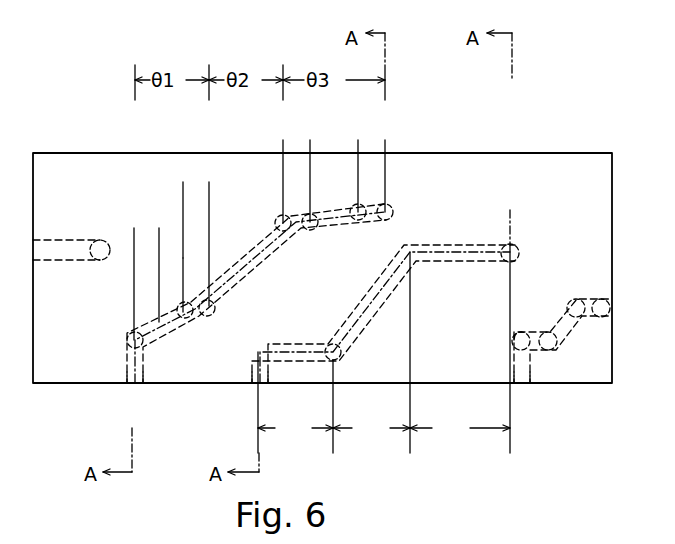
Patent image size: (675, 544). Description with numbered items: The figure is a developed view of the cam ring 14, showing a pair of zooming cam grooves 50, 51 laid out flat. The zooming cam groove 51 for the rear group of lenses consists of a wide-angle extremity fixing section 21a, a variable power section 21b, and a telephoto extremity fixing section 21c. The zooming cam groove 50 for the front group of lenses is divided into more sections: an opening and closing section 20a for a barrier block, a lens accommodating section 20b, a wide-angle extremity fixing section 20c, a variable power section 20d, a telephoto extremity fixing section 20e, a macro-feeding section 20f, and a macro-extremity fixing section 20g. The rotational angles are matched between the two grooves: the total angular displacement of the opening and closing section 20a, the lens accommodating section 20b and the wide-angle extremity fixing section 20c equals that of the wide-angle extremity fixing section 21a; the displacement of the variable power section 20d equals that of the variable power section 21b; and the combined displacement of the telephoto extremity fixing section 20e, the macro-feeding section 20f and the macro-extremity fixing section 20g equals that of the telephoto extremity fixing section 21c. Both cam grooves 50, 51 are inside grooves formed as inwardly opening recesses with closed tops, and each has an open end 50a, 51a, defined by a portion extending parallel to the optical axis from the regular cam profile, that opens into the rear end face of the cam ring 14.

The cam ring 14 is at (534, 162).
The opening and closing section 20a is at (174, 232).
The lens accommodating section 20b is at (200, 258).
The wide-angle extremity fixing section 20c is at (224, 185).
The variable power section 20d is at (283, 185).
The telephoto extremity fixing section 20e is at (330, 165).
The macro-feeding section 20f is at (338, 176).
The macro-extremity fixing section 20g is at (405, 163).
The wide-angle extremity fixing section 21a is at (333, 405).
The variable power section 21b is at (410, 405).
The telephoto extremity fixing section 21c is at (510, 405).
The zooming cam groove 50 is at (284, 254).
The open end 50a is at (128, 384).
The zooming cam groove 51 is at (57, 238).
The open end 51a is at (258, 386).